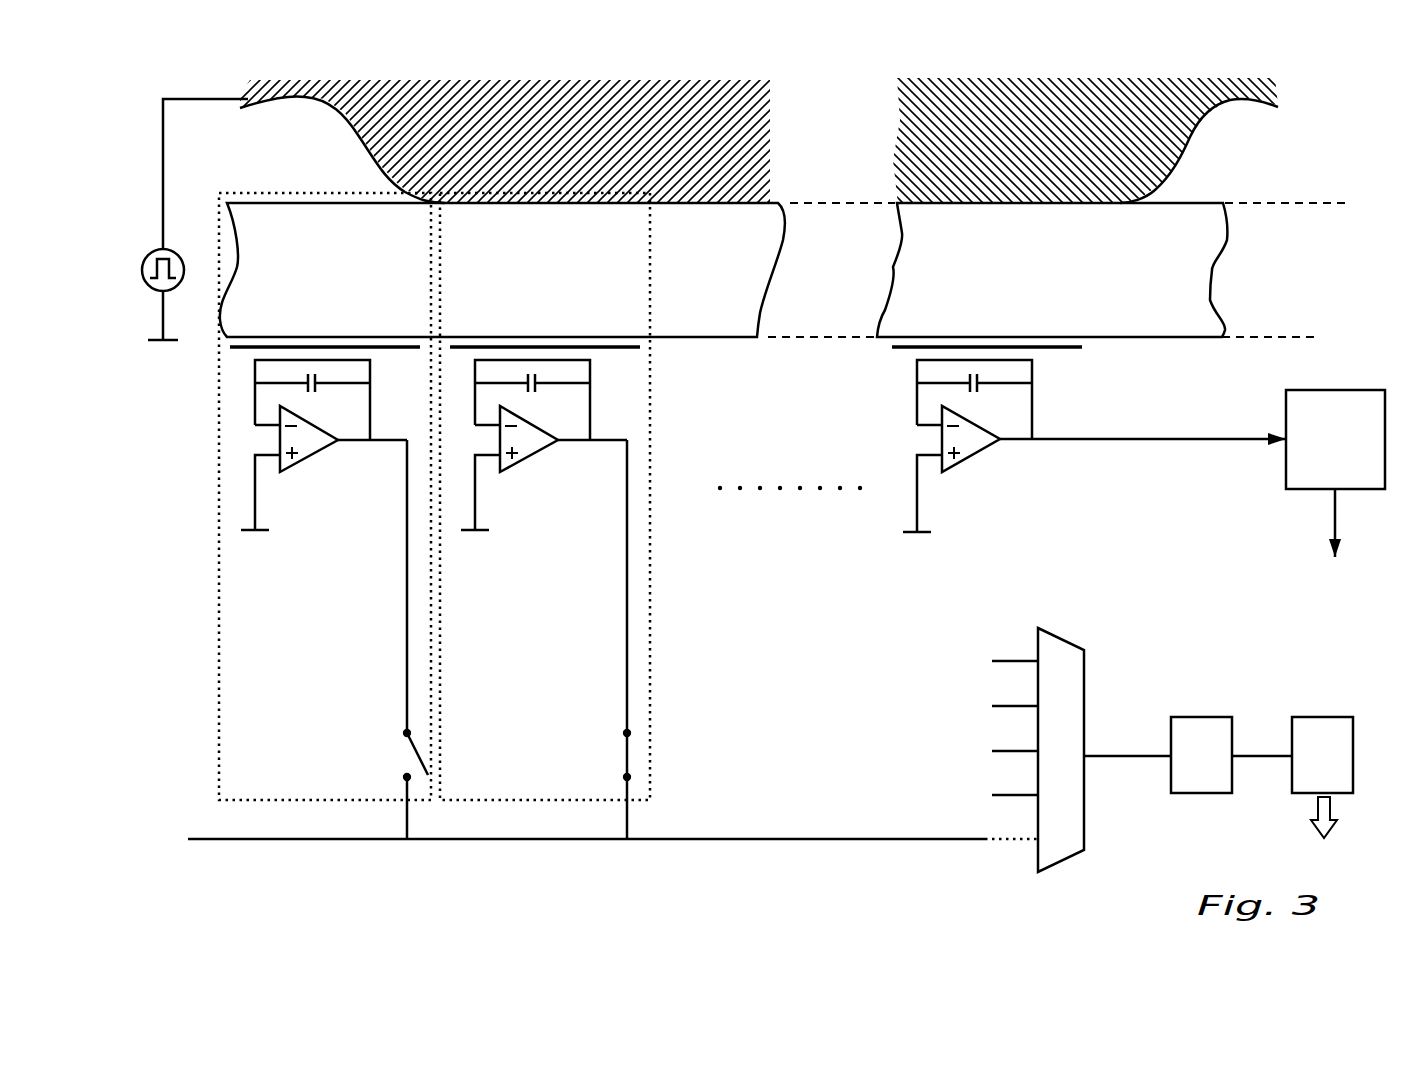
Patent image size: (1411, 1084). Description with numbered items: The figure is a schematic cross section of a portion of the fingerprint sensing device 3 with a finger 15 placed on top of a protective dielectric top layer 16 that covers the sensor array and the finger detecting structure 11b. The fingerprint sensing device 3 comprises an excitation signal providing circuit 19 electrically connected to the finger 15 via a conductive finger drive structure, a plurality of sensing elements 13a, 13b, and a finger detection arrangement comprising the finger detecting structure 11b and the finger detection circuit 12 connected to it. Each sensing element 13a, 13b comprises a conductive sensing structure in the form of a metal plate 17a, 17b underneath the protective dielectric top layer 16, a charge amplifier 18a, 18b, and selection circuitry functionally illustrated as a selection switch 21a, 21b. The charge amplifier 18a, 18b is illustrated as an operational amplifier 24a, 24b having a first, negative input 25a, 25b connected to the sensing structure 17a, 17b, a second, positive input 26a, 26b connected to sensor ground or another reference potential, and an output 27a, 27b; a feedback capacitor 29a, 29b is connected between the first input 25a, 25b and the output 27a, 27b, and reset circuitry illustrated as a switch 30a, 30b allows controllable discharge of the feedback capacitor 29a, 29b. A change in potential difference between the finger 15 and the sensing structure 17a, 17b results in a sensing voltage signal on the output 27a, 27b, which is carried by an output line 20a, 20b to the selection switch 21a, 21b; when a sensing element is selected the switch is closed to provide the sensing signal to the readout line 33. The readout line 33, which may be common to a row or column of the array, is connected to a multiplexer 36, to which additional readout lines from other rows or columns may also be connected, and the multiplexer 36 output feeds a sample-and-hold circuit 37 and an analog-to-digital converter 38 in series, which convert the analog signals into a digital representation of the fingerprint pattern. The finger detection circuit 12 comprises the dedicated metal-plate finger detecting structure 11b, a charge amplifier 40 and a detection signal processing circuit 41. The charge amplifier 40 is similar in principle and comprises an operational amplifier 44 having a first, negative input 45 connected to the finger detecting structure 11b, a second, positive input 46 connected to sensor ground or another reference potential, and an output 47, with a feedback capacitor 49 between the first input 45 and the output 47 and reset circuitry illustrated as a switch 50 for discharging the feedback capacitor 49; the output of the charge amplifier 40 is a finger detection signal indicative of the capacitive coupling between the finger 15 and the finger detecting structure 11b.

The fingerprint sensing device 3 is at (422, 561).
The finger detecting structure 11b is at (1053, 347).
The finger detection circuit 12 is at (1116, 433).
The sensing element 13a is at (286, 561).
The sensing element 13b is at (584, 561).
The finger 15 is at (590, 137).
The protective dielectric top layer 16 is at (538, 266).
The sensing structure 17a is at (397, 347).
The sensing structure 17b is at (618, 347).
The charge amplifier 18a is at (283, 452).
The charge amplifier 18b is at (544, 437).
The excitation signal providing circuit 19 is at (150, 287).
The output line 20a is at (383, 455).
The output line 20b is at (594, 462).
The selection switch 21a is at (388, 752).
The selection switch 21b is at (614, 752).
The operational amplifier 24a is at (321, 432).
The operational amplifier 24b is at (526, 421).
The first input 25a is at (280, 426).
The first input 25b is at (500, 426).
The second input 26a is at (263, 458).
The second input 26b is at (488, 457).
The output 27a is at (338, 443).
The output 27b is at (558, 445).
The feedback capacitor 29a is at (330, 372).
The feedback capacitor 29b is at (551, 372).
The reset circuitry 30a is at (317, 354).
The reset circuitry 30b is at (538, 354).
The readout line 33 is at (505, 842).
The multiplexer 36 is at (1068, 634).
The sample-and-hold circuit 37 is at (1199, 717).
The analog-to-digital converter 38 is at (1325, 717).
The charge amplifier 40 is at (1062, 422).
The detection signal processing circuit 41 is at (1339, 391).
The operational amplifier 44 is at (977, 423).
The first input 45 is at (943, 427).
The second input 46 is at (943, 457).
The output 47 is at (1034, 450).
The feedback capacitor 49 is at (993, 365).
The reset circuitry 50 is at (978, 355).